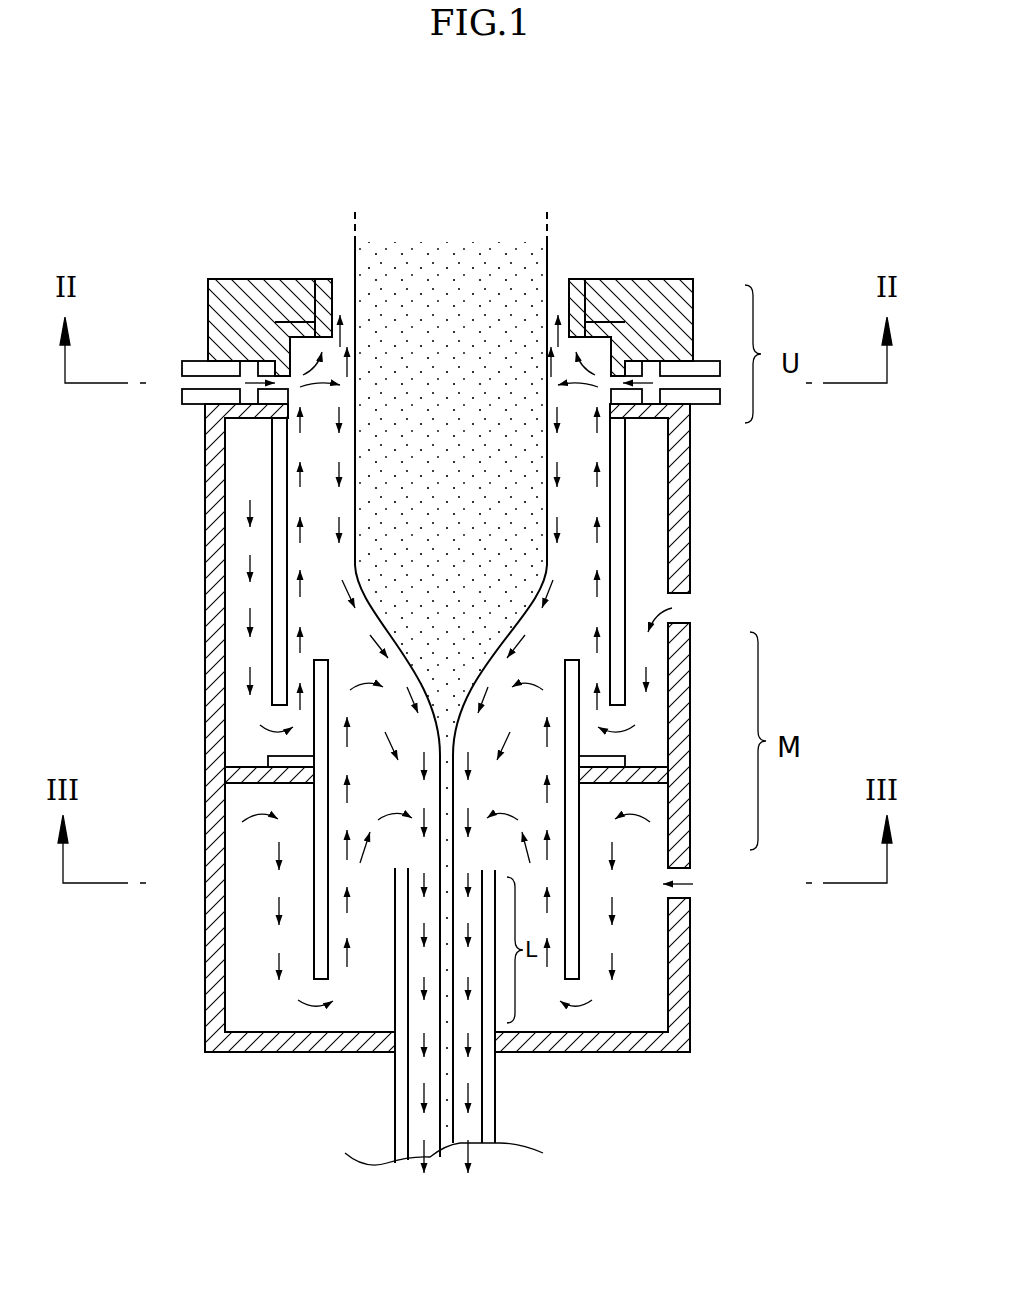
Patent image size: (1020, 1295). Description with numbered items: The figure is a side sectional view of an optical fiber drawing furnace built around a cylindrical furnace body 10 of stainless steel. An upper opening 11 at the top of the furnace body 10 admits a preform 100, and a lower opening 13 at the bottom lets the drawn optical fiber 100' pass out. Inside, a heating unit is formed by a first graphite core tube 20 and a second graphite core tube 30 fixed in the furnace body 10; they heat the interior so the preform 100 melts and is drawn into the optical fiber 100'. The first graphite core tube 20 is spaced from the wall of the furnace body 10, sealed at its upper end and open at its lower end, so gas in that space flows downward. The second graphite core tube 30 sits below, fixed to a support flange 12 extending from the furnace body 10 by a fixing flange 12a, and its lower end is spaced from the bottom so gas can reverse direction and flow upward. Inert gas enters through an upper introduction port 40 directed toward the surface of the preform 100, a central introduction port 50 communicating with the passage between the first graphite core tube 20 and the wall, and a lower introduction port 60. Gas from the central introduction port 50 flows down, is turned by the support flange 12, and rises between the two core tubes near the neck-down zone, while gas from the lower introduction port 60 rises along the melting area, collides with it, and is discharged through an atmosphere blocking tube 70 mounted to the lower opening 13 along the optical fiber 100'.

The furnace body 10 is at (205, 512).
The upper opening 11 is at (560, 277).
The support flange 12 is at (637, 782).
The fixing flange 12a is at (628, 760).
The lower opening 13 is at (392, 1057).
The first graphite core tube 20 is at (618, 510).
The second graphite core tube 30 is at (576, 932).
The upper introduction port 40 is at (179, 382).
The central introduction port 50 is at (700, 605).
The lower introduction port 60 is at (700, 893).
The atmosphere blocking tube 70 is at (488, 1062).
The preform 100 is at (451, 684).
The optical fiber 100' is at (333, 956).